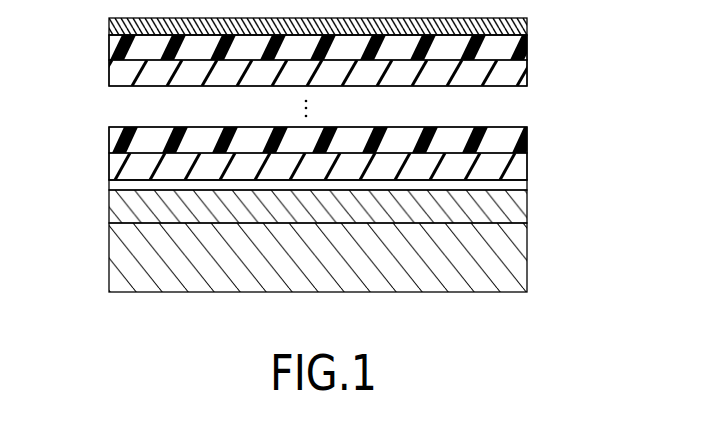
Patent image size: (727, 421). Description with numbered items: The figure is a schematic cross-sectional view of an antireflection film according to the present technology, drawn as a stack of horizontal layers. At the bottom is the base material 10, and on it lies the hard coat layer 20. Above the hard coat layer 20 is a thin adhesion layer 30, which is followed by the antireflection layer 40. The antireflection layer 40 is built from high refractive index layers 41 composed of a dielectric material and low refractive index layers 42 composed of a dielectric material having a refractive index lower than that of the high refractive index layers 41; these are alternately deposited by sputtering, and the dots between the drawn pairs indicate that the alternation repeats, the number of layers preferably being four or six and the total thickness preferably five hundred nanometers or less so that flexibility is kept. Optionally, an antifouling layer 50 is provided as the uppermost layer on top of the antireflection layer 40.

The base material 10 is at (527, 253).
The hard coat layer 20 is at (550, 190).
The adhesion layer 30 is at (527, 184).
The antireflection layer 40 is at (95, 33).
The high refractive index layer 41 is at (527, 165).
The low refractive index layer 42 is at (527, 138).
The antifouling layer 50 is at (527, 25).